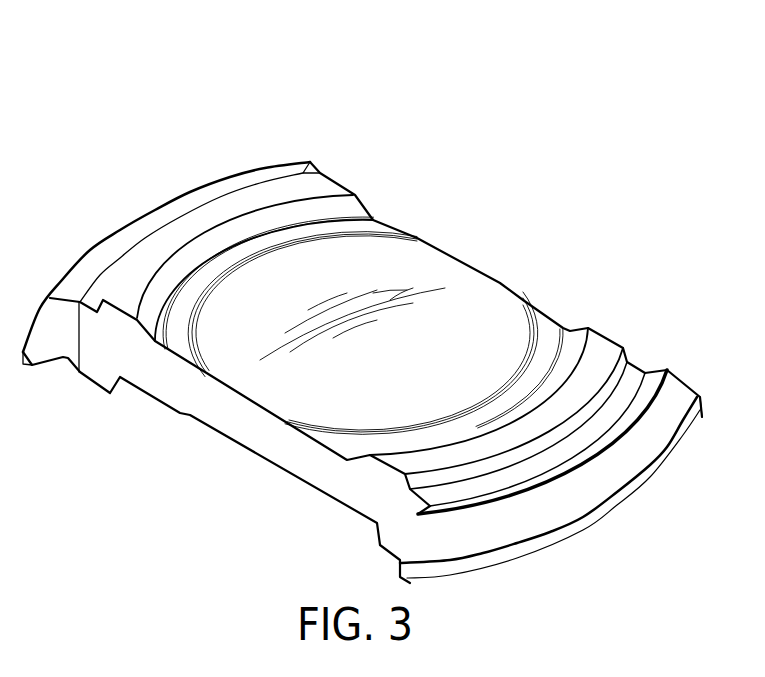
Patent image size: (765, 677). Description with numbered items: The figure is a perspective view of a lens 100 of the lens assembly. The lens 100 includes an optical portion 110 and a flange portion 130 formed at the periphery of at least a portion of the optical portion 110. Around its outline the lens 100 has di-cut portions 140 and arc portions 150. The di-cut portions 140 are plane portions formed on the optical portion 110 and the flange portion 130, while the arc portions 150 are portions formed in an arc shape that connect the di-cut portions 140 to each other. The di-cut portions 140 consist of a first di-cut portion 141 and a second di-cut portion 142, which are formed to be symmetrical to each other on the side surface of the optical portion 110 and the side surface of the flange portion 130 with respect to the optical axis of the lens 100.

The lens 100 is at (193, 87).
The optical portion 110 is at (300, 402).
The flange portion 130 is at (480, 492).
The di-cut portions 140 is at (412, 53).
The first di-cut portion 141 is at (192, 388).
The second di-cut portion 142 is at (472, 262).
The arc portions 150 is at (603, 490).